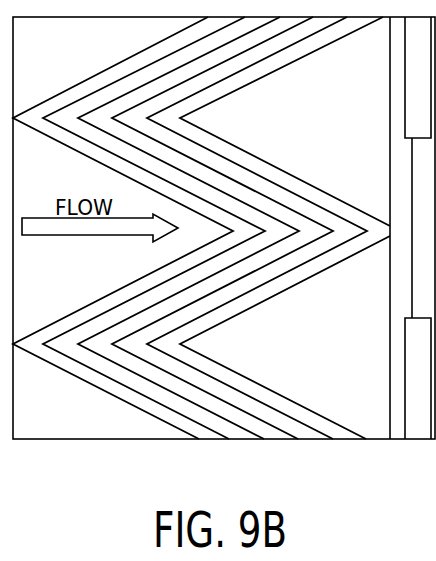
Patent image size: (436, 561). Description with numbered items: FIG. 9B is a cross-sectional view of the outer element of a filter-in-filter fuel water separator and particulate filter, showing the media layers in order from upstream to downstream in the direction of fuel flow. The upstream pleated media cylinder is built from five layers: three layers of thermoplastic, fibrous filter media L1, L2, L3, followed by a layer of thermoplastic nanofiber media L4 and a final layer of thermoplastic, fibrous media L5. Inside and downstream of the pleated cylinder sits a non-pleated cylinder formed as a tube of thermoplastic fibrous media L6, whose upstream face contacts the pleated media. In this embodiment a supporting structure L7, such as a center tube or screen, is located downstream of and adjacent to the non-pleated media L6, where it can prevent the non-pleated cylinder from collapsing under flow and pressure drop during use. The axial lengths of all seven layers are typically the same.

The first layer of thermoplastic fibrous filter media L1 is at (77, 316).
The second layer of thermoplastic fibrous filter media L2 is at (124, 306).
The third layer of thermoplastic fibrous filter media L3 is at (167, 300).
The layer of thermoplastic nanofiber media L4 is at (205, 307).
The final layer of thermoplastic fibrous media L5 is at (262, 295).
The non-pleated media layer L6 is at (397, 400).
The supporting structure L7 is at (418, 335).